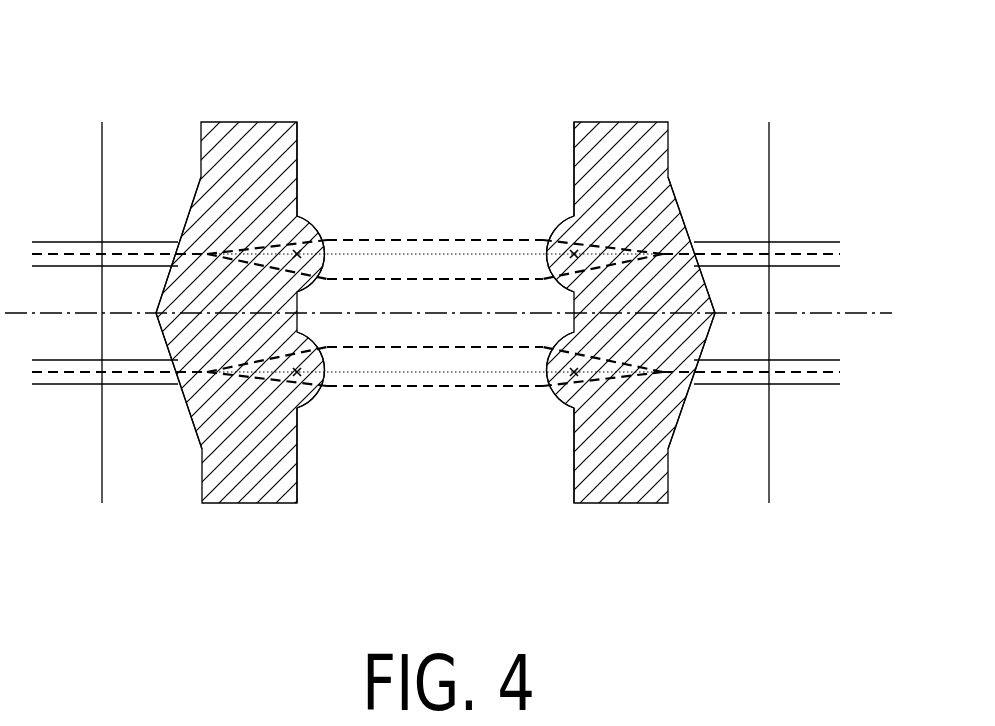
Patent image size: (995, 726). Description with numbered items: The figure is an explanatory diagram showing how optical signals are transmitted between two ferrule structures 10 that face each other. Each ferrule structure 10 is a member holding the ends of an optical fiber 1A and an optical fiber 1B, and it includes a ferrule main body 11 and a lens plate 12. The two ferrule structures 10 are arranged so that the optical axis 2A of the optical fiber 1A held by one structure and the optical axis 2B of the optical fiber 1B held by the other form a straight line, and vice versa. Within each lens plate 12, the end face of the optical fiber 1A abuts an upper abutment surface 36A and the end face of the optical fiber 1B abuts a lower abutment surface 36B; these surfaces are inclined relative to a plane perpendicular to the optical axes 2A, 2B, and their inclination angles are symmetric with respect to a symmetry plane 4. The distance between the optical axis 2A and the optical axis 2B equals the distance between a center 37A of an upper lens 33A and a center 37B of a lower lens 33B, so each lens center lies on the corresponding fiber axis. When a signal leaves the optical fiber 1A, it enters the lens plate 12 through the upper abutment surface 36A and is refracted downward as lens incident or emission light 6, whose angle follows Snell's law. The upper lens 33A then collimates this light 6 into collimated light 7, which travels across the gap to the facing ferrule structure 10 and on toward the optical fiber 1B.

The ferrule structure 10 is at (441, 261).
The ferrule main body 11 is at (60, 92).
The lens plate 12 is at (208, 92).
The optical fiber 1A is at (810, 240).
The optical fiber 1B is at (56, 240).
The optical axis 2A is at (737, 252).
The optical axis 2B is at (125, 252).
The symmetry plane 4 is at (877, 316).
The lens incident or emission light 6 is at (250, 252).
The collimated light 7 is at (433, 240).
The upper lens 33A is at (573, 218).
The lower lens 33B is at (298, 218).
The upper abutment surface 36A is at (680, 205).
The lower abutment surface 36B is at (190, 205).
The center of the upper lens 37A is at (560, 224).
The center of the lower lens 37B is at (312, 222).